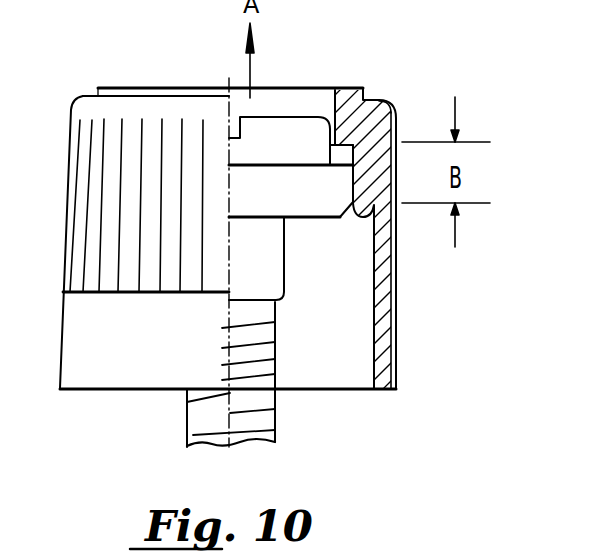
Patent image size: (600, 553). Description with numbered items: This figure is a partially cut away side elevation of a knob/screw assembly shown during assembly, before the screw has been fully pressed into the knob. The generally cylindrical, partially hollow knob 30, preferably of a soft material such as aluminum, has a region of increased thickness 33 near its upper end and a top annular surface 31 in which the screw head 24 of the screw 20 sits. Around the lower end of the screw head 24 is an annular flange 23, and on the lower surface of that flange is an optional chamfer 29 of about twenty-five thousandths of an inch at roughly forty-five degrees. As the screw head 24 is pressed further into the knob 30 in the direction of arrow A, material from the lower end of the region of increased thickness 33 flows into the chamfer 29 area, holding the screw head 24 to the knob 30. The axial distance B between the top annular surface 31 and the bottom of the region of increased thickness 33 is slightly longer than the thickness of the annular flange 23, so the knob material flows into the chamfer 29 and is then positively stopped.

The screw 20 is at (290, 143).
The annular flange 23 is at (292, 200).
The screw head 24 is at (250, 194).
The chamfer 29 is at (354, 205).
The knob 30 is at (372, 101).
The top annular surface 31 is at (350, 123).
The region of increased thickness 33 is at (390, 113).